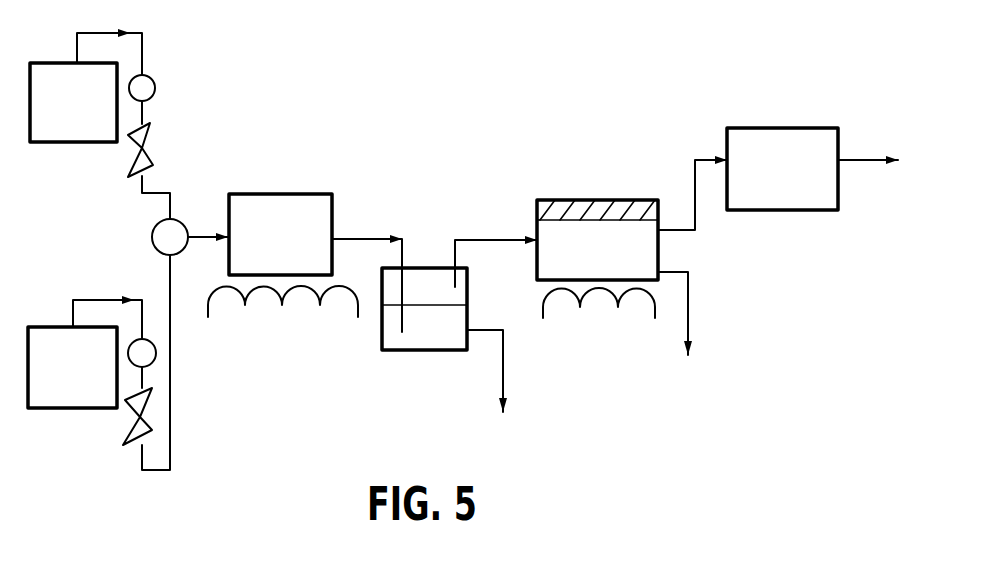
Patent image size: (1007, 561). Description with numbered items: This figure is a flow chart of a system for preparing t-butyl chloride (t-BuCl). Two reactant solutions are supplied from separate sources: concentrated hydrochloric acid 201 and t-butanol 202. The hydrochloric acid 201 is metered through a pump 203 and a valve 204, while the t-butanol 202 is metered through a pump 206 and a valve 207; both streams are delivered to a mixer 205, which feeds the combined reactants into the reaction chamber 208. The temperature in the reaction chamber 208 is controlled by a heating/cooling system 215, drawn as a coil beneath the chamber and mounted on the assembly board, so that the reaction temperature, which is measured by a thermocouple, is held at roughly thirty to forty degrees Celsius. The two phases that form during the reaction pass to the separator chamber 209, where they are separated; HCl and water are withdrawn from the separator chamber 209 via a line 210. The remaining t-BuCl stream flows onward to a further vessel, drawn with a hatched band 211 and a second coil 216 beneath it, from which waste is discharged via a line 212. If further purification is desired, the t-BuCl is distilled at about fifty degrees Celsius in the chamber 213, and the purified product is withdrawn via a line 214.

The concentrated hydrochloric acid 201 is at (92, 117).
The t-butanol 202 is at (48, 385).
The pump 203 is at (157, 82).
The valve 204 is at (147, 148).
The mixer 205 is at (152, 240).
The pump 206 is at (156, 348).
The valve 207 is at (147, 420).
The reaction chamber 208 is at (302, 253).
The separator chamber 209 is at (427, 353).
The line 210 is at (510, 383).
The catalyst bed 211 is at (571, 200).
The line 212 is at (690, 323).
The chamber 213 is at (793, 212).
The line 214 is at (868, 165).
The heating/cooling system 215 is at (290, 307).
The heating coil 216 is at (603, 312).